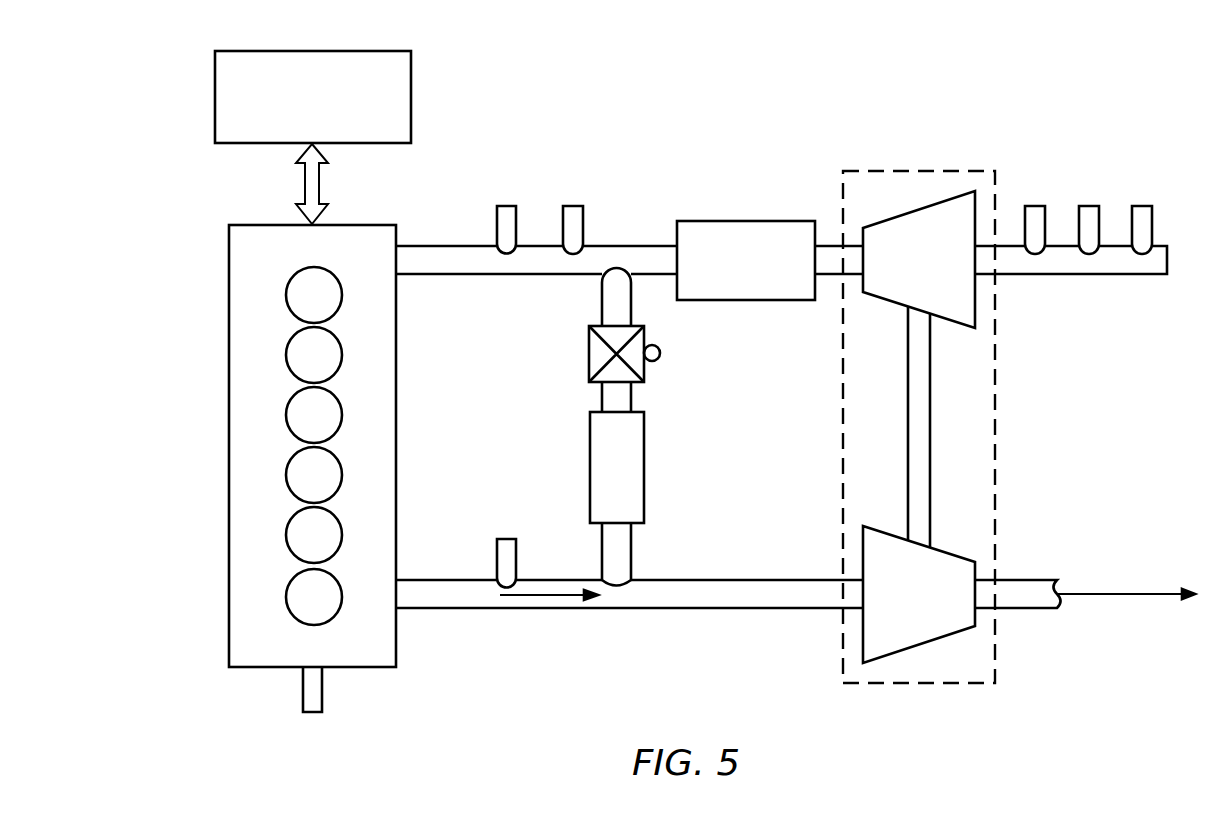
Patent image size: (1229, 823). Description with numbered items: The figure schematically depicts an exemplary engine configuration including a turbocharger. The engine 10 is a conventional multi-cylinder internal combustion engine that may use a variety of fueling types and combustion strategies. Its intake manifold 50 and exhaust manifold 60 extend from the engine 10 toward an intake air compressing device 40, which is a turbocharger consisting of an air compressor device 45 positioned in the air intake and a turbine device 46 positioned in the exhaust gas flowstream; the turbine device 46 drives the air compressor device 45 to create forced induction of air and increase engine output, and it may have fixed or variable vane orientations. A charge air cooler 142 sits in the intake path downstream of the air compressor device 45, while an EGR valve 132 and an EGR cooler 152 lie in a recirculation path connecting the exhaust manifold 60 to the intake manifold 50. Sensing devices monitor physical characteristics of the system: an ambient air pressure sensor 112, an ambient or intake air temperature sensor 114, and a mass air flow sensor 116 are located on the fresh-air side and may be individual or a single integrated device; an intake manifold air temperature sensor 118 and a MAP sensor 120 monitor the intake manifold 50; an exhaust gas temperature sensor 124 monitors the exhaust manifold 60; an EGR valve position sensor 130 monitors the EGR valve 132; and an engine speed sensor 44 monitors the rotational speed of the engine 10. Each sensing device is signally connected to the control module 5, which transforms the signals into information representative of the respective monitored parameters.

The control module 5 is at (403, 100).
The engine 10 is at (397, 230).
The intake air compressing device 40 is at (908, 172).
The engine speed sensor 44 is at (317, 697).
The air compressor device 45 is at (948, 222).
The turbine device 46 is at (940, 615).
The intake manifold 50 is at (440, 265).
The exhaust manifold 60 is at (676, 603).
The ambient air pressure sensor 112 is at (1143, 220).
The ambient or intake air temperature sensor 114 is at (1090, 220).
The mass air flow sensor 116 is at (1036, 214).
The intake manifold air temperature sensor 118 is at (578, 220).
The MAP sensor 120 is at (512, 216).
The exhaust gas temperature sensor 124 is at (508, 552).
The EGR valve position sensor 130 is at (660, 355).
The EGR valve 132 is at (595, 363).
The charge air cooler 142 is at (742, 232).
The EGR cooler 152 is at (633, 462).